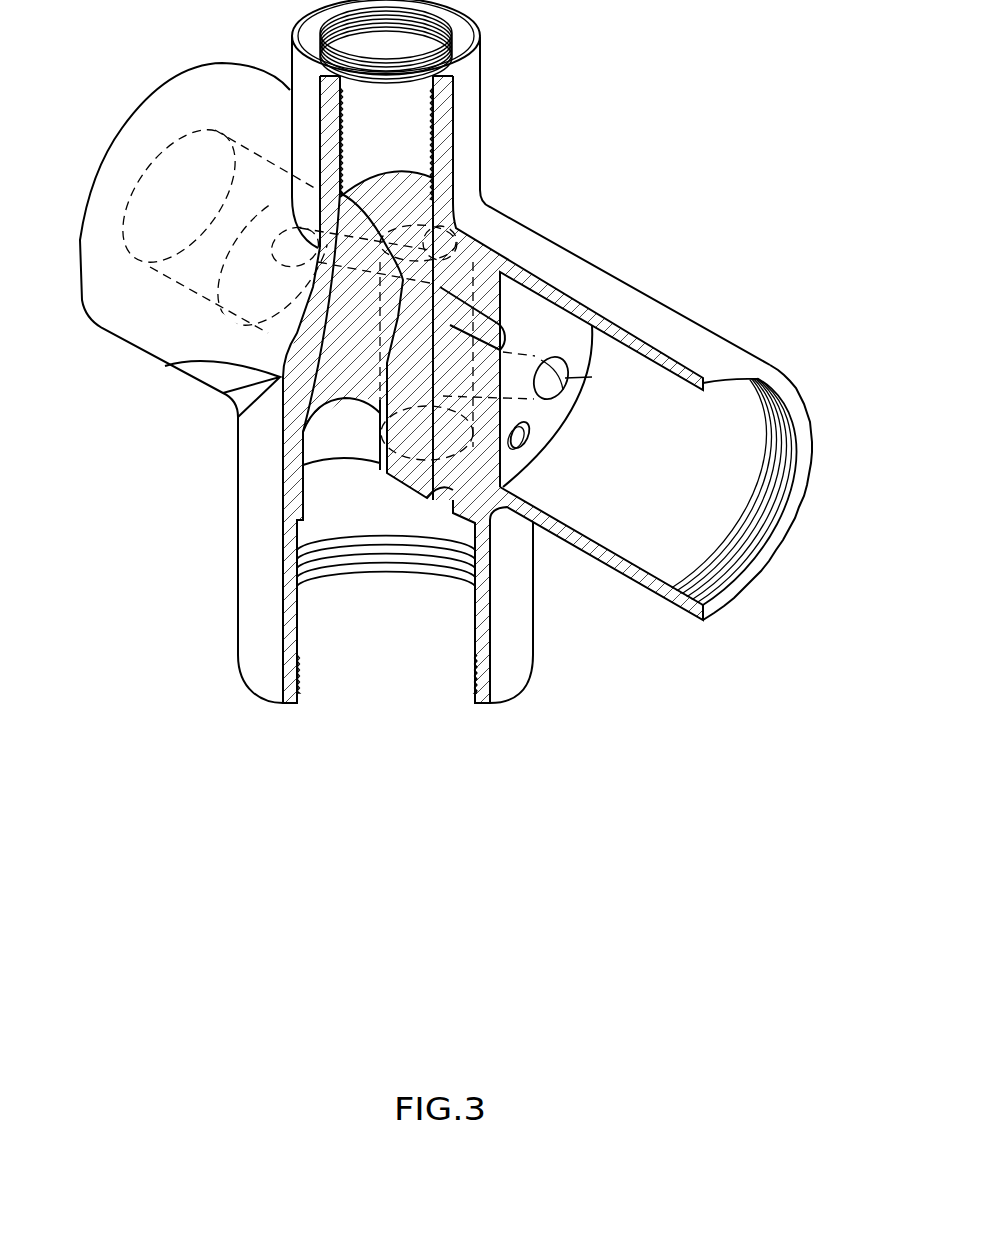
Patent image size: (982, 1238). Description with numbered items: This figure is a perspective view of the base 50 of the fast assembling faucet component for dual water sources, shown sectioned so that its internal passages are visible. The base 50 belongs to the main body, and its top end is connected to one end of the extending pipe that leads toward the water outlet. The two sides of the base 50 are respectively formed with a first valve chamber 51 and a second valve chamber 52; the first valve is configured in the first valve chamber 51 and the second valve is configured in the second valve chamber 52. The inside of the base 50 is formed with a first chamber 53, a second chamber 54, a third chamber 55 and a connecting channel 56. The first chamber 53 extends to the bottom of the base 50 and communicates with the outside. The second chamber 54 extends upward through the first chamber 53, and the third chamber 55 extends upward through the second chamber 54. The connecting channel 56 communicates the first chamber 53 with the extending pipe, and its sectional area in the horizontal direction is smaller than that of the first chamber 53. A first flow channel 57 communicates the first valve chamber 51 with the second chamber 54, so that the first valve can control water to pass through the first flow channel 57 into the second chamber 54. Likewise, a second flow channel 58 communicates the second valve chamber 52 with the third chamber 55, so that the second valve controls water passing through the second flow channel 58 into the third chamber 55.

The base 50 is at (617, 277).
The first valve chamber 51 is at (700, 517).
The second valve chamber 52 is at (190, 188).
The first chamber 53 is at (478, 612).
The second chamber 54 is at (405, 405).
The third chamber 55 is at (465, 225).
The connecting channel 56 is at (170, 363).
The first flow channel 57 is at (570, 380).
The second flow channel 58 is at (405, 198).